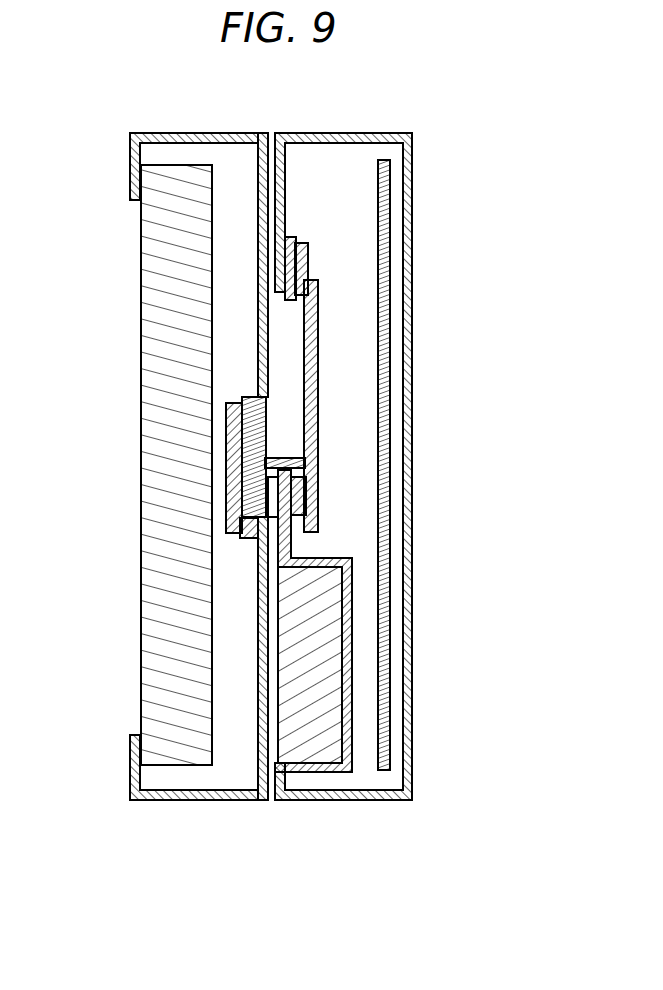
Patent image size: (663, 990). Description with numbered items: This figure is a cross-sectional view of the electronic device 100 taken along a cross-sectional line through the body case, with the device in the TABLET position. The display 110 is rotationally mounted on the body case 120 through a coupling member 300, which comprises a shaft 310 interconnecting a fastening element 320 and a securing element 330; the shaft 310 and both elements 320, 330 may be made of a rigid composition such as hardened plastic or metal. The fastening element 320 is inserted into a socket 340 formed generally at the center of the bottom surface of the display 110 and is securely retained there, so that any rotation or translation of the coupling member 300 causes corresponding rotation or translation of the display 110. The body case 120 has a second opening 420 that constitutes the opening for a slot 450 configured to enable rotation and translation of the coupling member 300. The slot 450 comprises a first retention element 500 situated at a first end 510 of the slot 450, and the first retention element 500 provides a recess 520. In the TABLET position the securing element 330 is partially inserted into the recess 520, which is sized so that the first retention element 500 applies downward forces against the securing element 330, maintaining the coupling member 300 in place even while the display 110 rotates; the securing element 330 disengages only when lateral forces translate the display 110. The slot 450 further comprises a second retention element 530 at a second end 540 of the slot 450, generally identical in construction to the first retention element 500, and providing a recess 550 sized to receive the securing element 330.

The electronic device 100 is at (290, 826).
The display 110 is at (193, 133).
The body case 120 is at (384, 133).
The coupling member 300 is at (254, 418).
The shaft 310 is at (272, 452).
The fastening element 320 is at (252, 509).
The securing element 330 is at (304, 470).
The socket 340 is at (244, 467).
The second opening 420 is at (258, 352).
The slot 450 is at (298, 357).
The first retention element 500 is at (304, 510).
The first end 510 is at (293, 451).
The recess 520 is at (302, 492).
The second retention element 530 is at (291, 268).
The second end 540 is at (294, 319).
The recess 550 is at (309, 275).